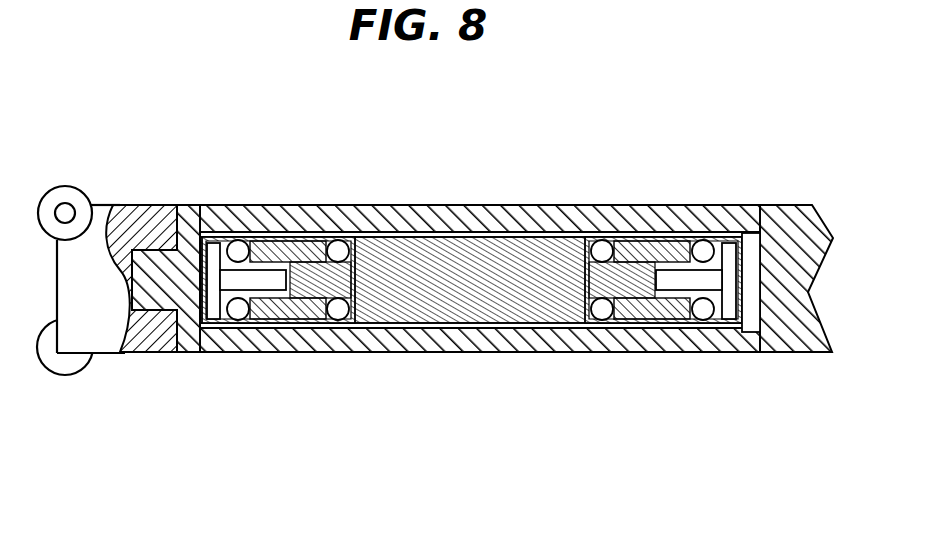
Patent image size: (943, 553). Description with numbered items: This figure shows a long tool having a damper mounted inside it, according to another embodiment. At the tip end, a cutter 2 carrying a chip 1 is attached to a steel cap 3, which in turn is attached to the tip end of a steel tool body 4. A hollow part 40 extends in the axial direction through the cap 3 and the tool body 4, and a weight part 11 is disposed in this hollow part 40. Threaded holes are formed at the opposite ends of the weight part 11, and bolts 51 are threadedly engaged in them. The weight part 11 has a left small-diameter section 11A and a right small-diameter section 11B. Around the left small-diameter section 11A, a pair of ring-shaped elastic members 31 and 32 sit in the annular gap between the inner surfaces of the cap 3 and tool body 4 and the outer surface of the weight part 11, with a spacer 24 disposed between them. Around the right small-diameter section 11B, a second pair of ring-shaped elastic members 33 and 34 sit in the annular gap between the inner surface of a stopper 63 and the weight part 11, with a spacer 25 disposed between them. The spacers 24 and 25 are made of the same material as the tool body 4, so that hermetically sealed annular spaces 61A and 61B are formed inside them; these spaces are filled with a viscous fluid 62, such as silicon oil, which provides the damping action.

The chip 1 is at (65, 197).
The cutter 2 is at (147, 205).
The cap 3 is at (212, 205).
The tool body 4 is at (633, 215).
The weight part 11 is at (455, 312).
The left small-diameter section 11A is at (275, 238).
The right small-diameter section 11B is at (672, 240).
The spacer 24 is at (278, 318).
The spacer 25 is at (688, 355).
The ring-shaped elastic member 31 is at (243, 310).
The ring-shaped elastic member 32 is at (352, 315).
The ring-shaped elastic member 33 is at (600, 248).
The ring-shaped elastic member 34 is at (705, 245).
The hollow part 40 is at (478, 237).
The bolt 51 is at (211, 330).
The annular space 61A is at (334, 244).
The annular space 61B is at (605, 312).
The viscous fluid 62 is at (336, 312).
The stopper 63 is at (752, 255).